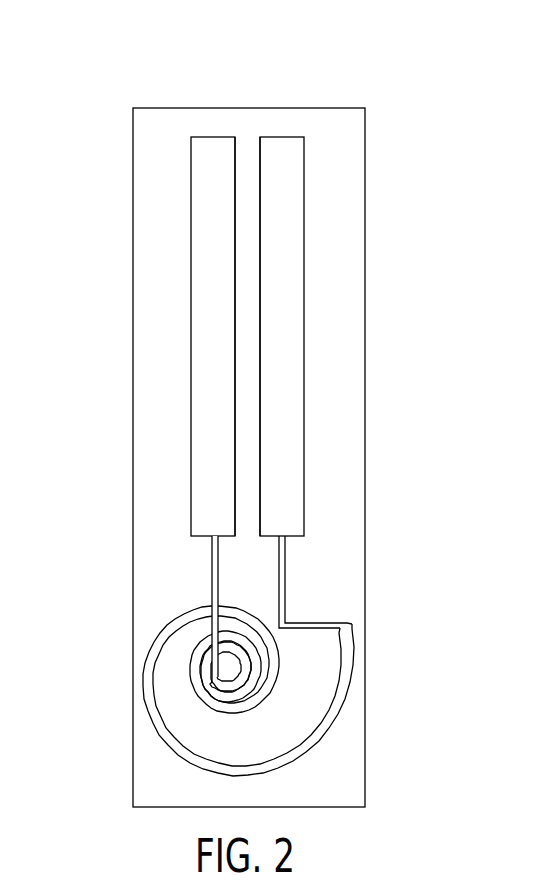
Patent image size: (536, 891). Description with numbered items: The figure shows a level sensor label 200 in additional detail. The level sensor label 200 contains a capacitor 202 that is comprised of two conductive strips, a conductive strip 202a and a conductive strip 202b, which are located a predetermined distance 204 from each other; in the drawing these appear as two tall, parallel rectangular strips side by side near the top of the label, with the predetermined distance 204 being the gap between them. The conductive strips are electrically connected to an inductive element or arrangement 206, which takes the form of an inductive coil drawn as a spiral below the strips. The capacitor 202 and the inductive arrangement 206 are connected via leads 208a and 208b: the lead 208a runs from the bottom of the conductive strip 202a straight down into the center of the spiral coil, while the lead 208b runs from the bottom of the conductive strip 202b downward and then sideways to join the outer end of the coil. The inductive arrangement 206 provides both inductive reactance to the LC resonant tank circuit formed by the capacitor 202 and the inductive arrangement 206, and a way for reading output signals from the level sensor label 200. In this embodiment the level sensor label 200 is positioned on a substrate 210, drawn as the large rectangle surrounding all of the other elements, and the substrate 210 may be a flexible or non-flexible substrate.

The level sensor label 200 is at (116, 95).
The capacitor 202 is at (206, 119).
The conductive strip 202a is at (198, 208).
The conductive strip 202b is at (298, 207).
The predetermined distance 204 is at (257, 122).
The inductive arrangement 206 is at (348, 655).
The lead 208a is at (217, 569).
The lead 208b is at (284, 588).
The substrate 210 is at (366, 440).